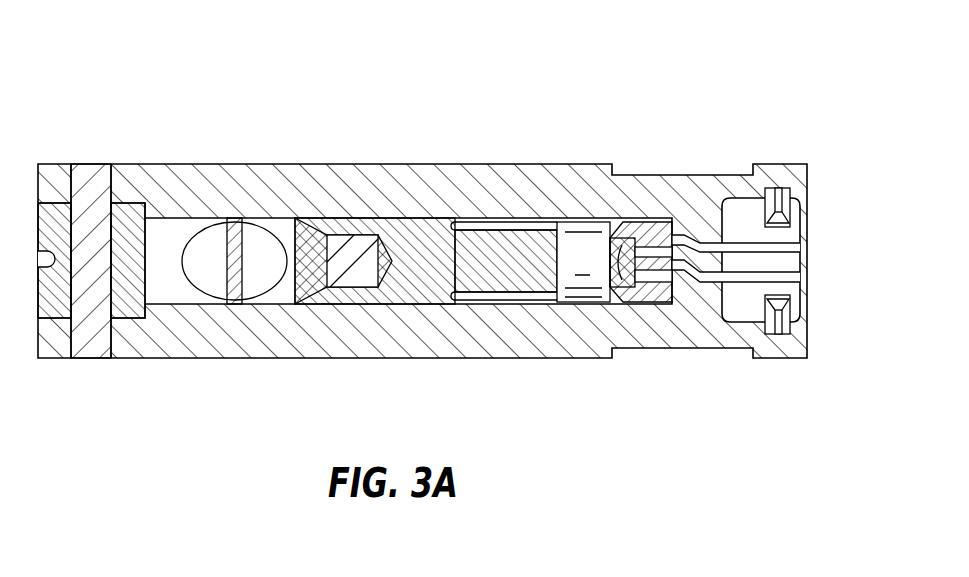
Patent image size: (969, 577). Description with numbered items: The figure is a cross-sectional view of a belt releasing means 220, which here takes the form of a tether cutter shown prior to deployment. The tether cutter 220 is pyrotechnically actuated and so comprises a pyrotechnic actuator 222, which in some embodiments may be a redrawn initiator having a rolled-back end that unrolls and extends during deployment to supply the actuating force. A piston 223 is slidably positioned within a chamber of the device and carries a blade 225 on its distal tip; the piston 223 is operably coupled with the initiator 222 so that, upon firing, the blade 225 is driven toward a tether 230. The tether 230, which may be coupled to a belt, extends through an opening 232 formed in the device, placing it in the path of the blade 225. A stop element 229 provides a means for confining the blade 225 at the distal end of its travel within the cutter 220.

The releasing means 220 is at (660, 110).
The pyrotechnic actuator 222 is at (572, 216).
The piston 223 is at (418, 253).
The blade 225 is at (308, 253).
The stop element 229 is at (129, 312).
The tether 230 is at (230, 272).
The opening 232 is at (188, 233).